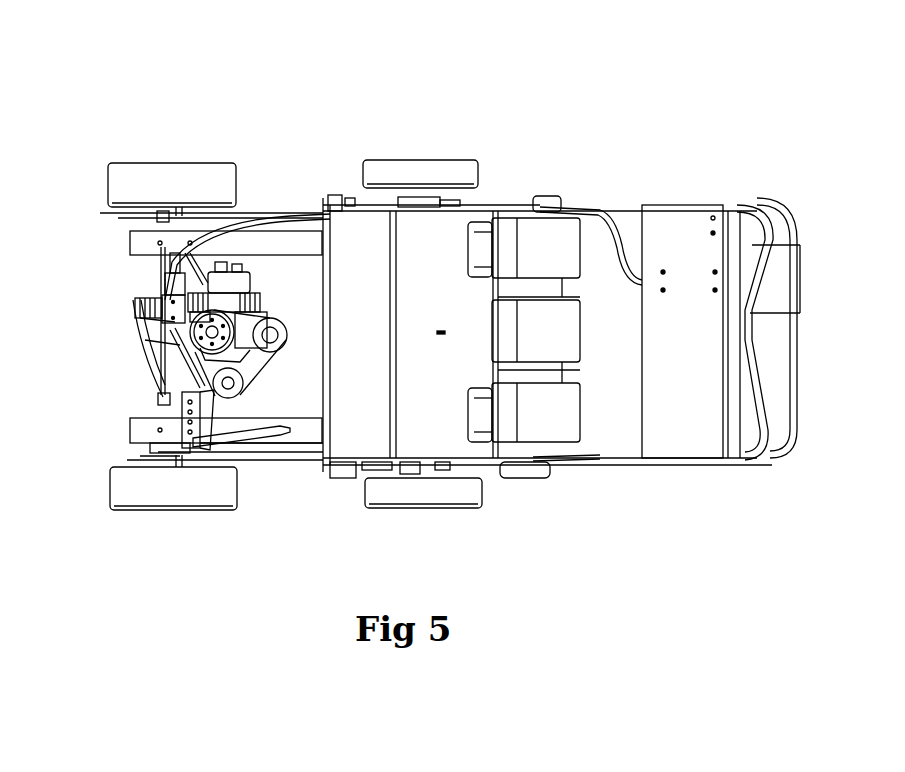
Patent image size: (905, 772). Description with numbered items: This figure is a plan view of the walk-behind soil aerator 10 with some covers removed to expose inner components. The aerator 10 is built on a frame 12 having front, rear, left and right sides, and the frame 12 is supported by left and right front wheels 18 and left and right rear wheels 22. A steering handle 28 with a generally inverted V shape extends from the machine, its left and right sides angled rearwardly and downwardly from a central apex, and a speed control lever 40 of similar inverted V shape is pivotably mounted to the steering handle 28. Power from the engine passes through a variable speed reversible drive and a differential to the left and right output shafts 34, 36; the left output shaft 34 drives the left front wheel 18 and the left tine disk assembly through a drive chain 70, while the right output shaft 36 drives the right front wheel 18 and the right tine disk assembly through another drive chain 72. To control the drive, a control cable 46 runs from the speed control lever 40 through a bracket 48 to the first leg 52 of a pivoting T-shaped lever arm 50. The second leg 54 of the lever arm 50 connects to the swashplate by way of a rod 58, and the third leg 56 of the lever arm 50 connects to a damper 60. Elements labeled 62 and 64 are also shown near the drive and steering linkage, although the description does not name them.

The walk-behind soil aerator 10 is at (405, 118).
The frame 12 is at (286, 240).
The front wheels 18 is at (172, 185).
The rear wheels 22 is at (476, 172).
The steering handle 28 is at (765, 447).
The left output shaft 34 is at (185, 448).
The right output shaft 36 is at (170, 224).
The speed control lever 40 is at (785, 445).
The control cable 46 is at (160, 285).
The bracket 48 is at (170, 305).
The lever arm 50 is at (168, 398).
The first leg 52 is at (157, 403).
The second leg 54 is at (158, 380).
The third leg 56 is at (186, 430).
The rod 58 is at (199, 430).
The damper 60 is at (253, 434).
The suspension arm 62 is at (155, 462).
The tie rod 64 is at (160, 213).
The drive chain 70 is at (240, 460).
The drive chain 72 is at (207, 218).